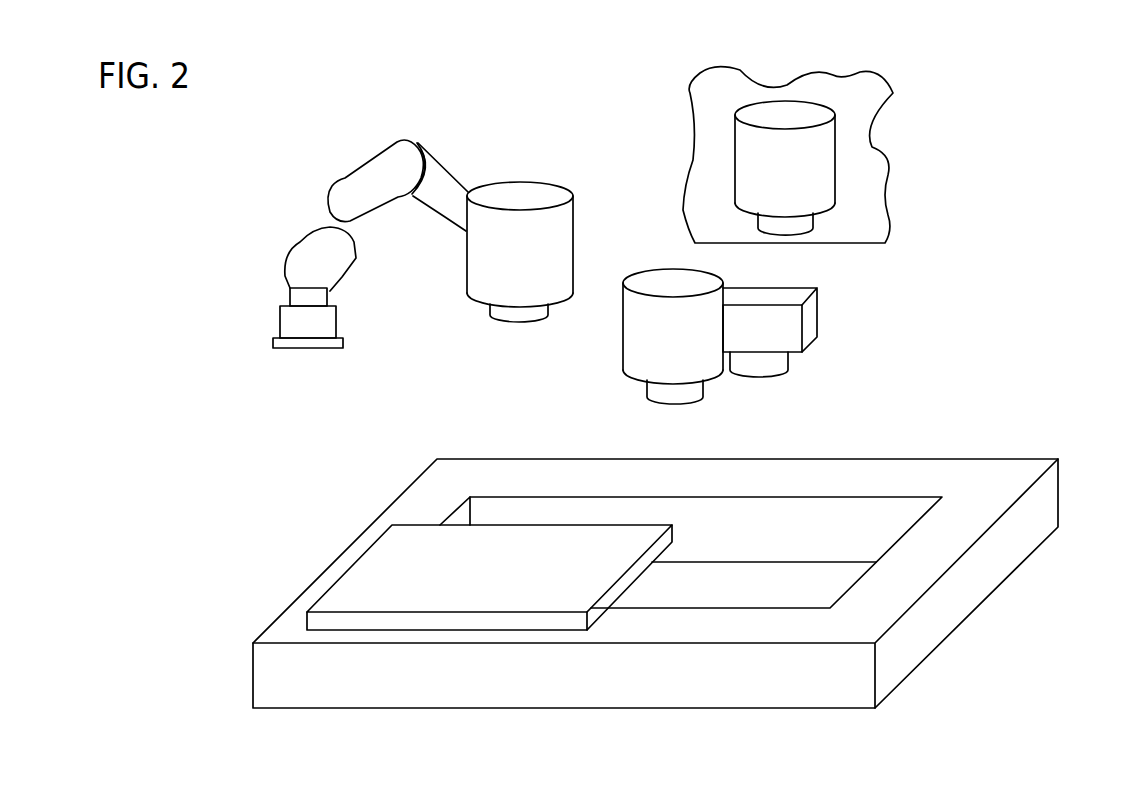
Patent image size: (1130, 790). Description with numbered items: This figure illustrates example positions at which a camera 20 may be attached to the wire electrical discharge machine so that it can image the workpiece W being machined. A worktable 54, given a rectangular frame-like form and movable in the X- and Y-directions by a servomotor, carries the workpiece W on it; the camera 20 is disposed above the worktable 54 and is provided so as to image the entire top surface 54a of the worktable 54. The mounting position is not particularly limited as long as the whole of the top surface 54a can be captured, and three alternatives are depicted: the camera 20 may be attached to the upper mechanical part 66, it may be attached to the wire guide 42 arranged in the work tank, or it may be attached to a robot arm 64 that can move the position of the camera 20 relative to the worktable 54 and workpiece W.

The camera 20 is at (517, 195).
The wire guide 42 is at (808, 317).
The worktable 54 is at (1044, 445).
The top surface 54a is at (905, 473).
The robot arm 64 is at (308, 257).
The upper mechanical part 66 is at (877, 107).
The workpiece W is at (390, 568).